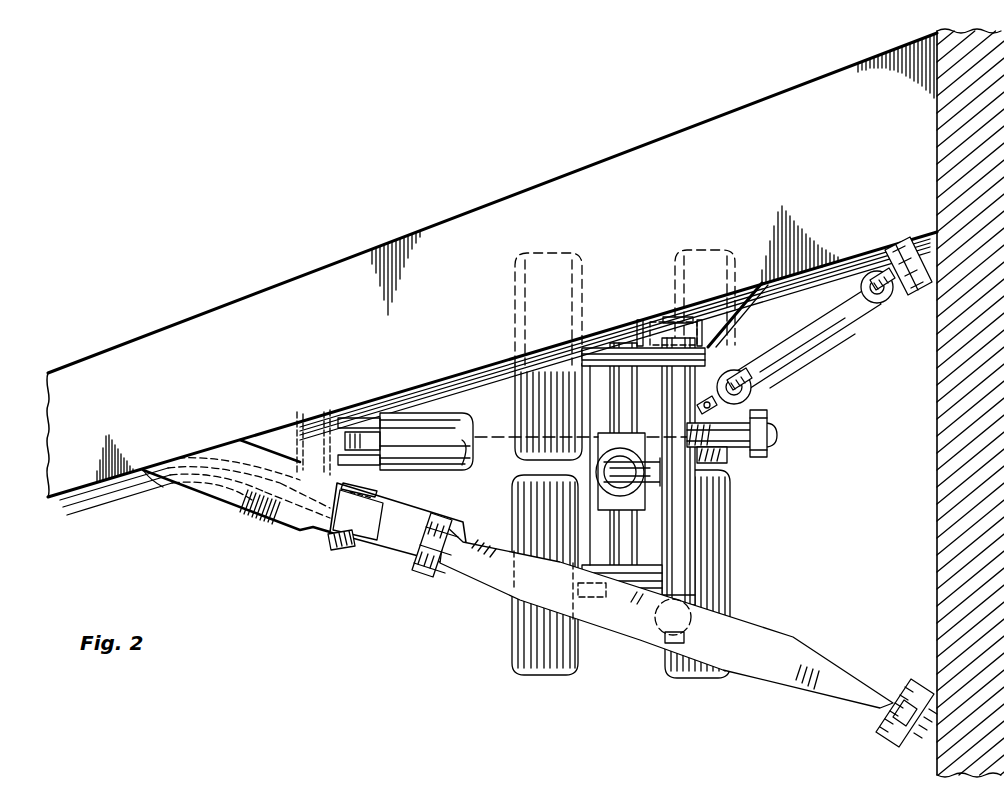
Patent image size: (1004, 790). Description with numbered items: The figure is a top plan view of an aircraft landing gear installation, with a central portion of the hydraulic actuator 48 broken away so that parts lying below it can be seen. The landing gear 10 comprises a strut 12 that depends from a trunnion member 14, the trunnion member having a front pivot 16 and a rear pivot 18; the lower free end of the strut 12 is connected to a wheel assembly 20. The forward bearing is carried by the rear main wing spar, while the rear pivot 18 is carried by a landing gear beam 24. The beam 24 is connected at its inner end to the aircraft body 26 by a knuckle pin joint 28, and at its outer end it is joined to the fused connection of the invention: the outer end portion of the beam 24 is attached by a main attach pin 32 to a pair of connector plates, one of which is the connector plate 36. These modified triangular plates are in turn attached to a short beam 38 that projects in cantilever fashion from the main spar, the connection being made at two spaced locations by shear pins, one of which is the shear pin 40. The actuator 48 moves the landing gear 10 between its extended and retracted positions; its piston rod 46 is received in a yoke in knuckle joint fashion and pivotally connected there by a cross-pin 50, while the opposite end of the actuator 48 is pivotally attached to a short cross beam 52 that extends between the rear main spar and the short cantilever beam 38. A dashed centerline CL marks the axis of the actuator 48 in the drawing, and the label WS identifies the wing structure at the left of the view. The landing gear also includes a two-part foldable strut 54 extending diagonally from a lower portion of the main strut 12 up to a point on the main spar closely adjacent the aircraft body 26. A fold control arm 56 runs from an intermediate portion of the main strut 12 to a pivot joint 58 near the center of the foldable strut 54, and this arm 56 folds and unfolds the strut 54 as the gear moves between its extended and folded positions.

The landing gear 10 is at (702, 439).
The strut 12 is at (600, 492).
The trunnion member 14 is at (680, 561).
The front pivot 16 is at (672, 330).
The rear pivot 18 is at (655, 636).
The wheel assembly 20 is at (734, 500).
The landing gear beam 24 is at (774, 677).
The aircraft body 26 is at (934, 577).
The knuckle pin joint 28 is at (875, 722).
The main attach pin 32 is at (424, 572).
The connector plate 36 is at (400, 507).
The short beam 38 is at (281, 513).
The shear pin 40 is at (347, 547).
The piston rod 46 is at (745, 447).
The actuator 48 is at (405, 430).
The cross-pin 50 is at (762, 408).
The short cross beam 52 is at (294, 428).
The foldable strut 54 is at (812, 346).
The fold control arm 56 is at (703, 412).
The pivot joint 58 is at (748, 368).
The wing structure WS is at (100, 487).
The centerline CL is at (470, 377).